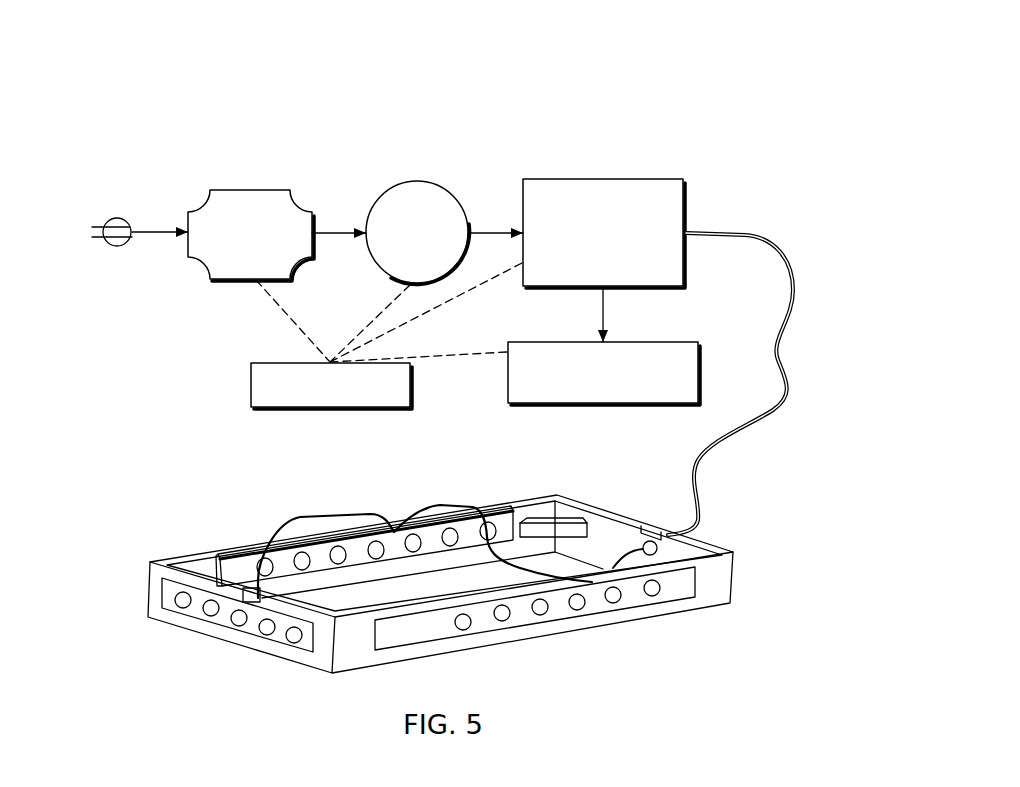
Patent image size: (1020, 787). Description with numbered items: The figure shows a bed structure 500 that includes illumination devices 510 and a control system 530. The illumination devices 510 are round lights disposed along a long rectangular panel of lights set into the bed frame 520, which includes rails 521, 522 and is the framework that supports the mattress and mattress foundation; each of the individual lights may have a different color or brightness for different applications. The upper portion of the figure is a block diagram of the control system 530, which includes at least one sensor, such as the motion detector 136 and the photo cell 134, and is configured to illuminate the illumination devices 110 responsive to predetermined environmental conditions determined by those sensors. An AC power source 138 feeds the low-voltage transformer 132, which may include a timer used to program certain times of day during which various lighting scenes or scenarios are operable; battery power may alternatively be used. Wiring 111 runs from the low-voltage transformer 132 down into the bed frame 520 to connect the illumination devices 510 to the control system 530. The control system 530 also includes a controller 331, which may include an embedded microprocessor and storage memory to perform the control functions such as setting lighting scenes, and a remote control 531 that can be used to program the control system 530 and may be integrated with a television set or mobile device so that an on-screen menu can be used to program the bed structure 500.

The bed structure 500 is at (593, 67).
The control system 530 is at (173, 177).
The AC power source 138 is at (118, 219).
The illumination devices 110 is at (125, 257).
The motion detector 136 is at (250, 190).
The photo cell 134 is at (417, 181).
The low-voltage transformer 132 is at (603, 179).
The controller 331 is at (251, 386).
The remote control 531 is at (508, 376).
The wiring 111 is at (790, 310).
The bed frame 520 is at (712, 582).
The rail 521 is at (217, 556).
The rail 522 is at (155, 592).
The illumination devices 510 is at (238, 618).